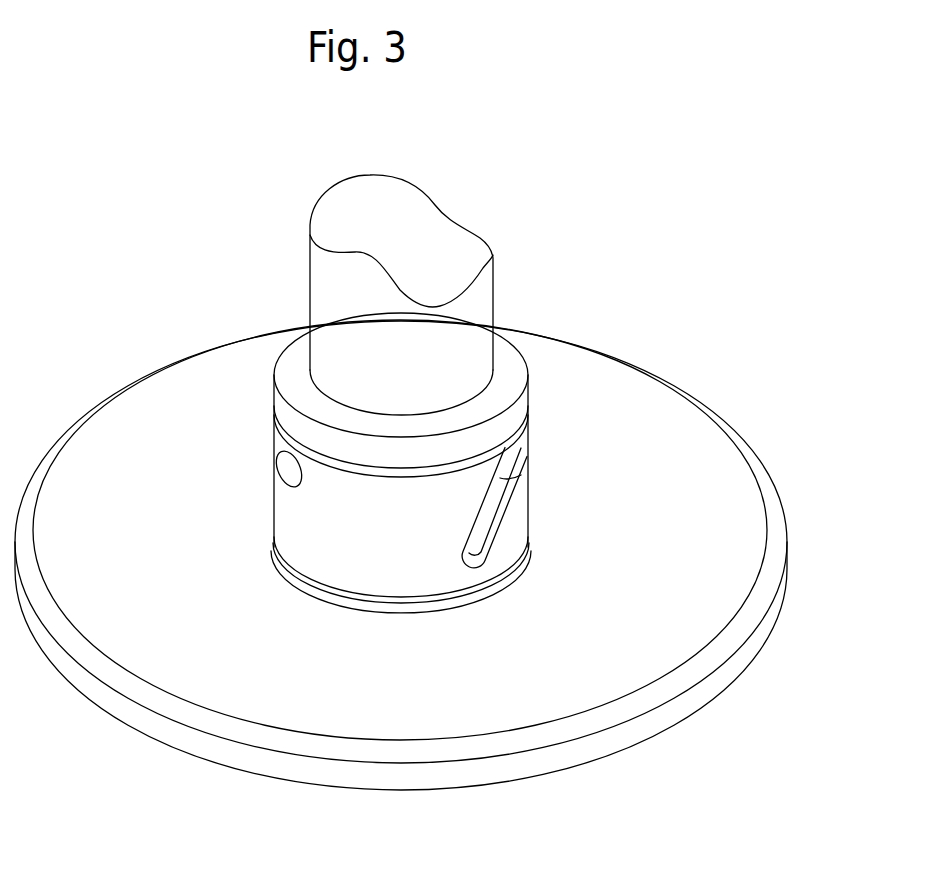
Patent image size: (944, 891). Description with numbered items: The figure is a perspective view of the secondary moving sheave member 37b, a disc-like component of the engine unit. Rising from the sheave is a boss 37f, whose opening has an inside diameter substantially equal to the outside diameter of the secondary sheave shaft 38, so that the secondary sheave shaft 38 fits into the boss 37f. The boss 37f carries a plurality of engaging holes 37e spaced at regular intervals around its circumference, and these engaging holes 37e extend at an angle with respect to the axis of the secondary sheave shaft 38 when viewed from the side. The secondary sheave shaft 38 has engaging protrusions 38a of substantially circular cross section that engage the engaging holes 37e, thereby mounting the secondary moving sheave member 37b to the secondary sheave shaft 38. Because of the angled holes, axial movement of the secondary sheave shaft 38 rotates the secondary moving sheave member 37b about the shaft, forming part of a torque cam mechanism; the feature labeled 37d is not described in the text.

The secondary sheave shaft 38 is at (496, 284).
The engaging protrusions 38a is at (273, 468).
The secondary moving sheave member 37b is at (610, 273).
The disc flange 37d is at (278, 389).
The engaging holes 37e is at (486, 533).
The boss 37f is at (532, 373).